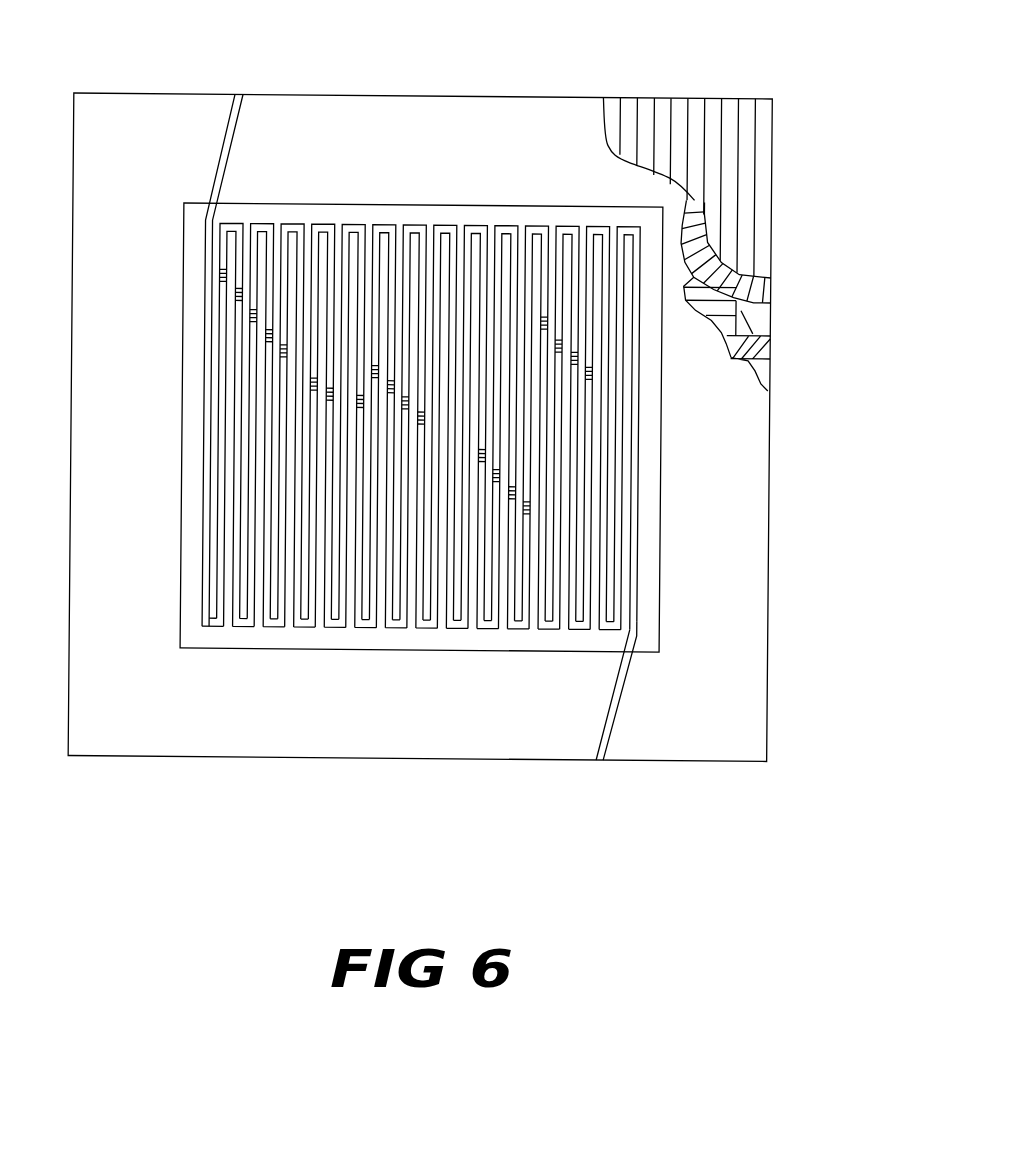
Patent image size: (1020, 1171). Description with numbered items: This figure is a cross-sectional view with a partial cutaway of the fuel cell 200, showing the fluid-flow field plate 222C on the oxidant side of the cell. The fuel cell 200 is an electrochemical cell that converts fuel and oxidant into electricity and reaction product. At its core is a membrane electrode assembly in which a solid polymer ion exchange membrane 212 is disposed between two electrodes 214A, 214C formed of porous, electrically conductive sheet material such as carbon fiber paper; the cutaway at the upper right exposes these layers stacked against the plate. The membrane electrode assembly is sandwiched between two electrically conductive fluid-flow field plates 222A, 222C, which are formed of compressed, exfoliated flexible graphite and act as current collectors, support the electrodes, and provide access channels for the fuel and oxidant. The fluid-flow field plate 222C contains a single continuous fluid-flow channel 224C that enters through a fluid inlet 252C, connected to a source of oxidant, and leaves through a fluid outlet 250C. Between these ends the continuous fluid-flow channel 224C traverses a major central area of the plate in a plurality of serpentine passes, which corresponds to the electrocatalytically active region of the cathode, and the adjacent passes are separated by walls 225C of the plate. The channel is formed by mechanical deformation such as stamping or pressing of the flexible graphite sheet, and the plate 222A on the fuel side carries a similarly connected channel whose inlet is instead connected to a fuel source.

The fuel cell 200 is at (866, 620).
The ion exchange membrane 212 is at (754, 320).
The electrode 214A is at (757, 279).
The electrode 214C is at (753, 354).
The fluid-flow field plate 222A is at (744, 112).
The fluid-flow field plate 222C is at (756, 682).
The continuous fluid-flow channel 224C is at (565, 225).
The wall 225C is at (506, 628).
The fluid outlet 250C is at (605, 757).
The fluid inlet 252C is at (240, 94).